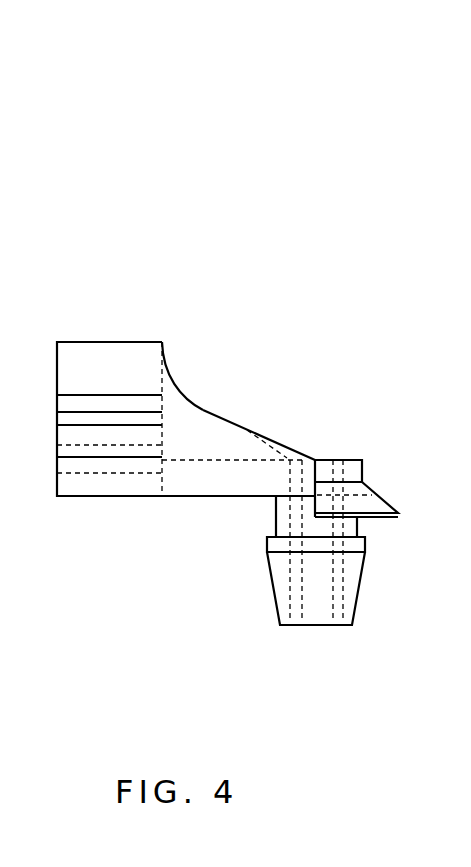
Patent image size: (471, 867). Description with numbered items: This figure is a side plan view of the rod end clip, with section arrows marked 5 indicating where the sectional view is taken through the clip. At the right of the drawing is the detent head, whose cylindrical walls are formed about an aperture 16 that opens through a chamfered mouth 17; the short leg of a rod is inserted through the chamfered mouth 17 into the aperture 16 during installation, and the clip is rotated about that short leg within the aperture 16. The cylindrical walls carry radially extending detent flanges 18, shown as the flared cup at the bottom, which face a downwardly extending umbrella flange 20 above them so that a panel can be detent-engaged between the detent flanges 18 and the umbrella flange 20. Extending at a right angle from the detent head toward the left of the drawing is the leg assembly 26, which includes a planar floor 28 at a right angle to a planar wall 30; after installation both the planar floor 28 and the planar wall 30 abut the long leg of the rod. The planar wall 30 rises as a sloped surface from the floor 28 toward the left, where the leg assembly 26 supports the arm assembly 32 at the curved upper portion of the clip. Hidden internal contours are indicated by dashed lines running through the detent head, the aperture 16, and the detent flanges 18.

The section line 5- 5 is at (107, 310).
The aperture 16 is at (340, 600).
The chamfered mouth 17 is at (348, 464).
The radially extending detent flanges 18 is at (360, 585).
The umbrella flange 20 is at (375, 518).
The leg assembly 26 is at (173, 513).
The planar floor 28 is at (245, 483).
The planar wall 30 is at (198, 420).
The arm assembly 32 is at (143, 327).